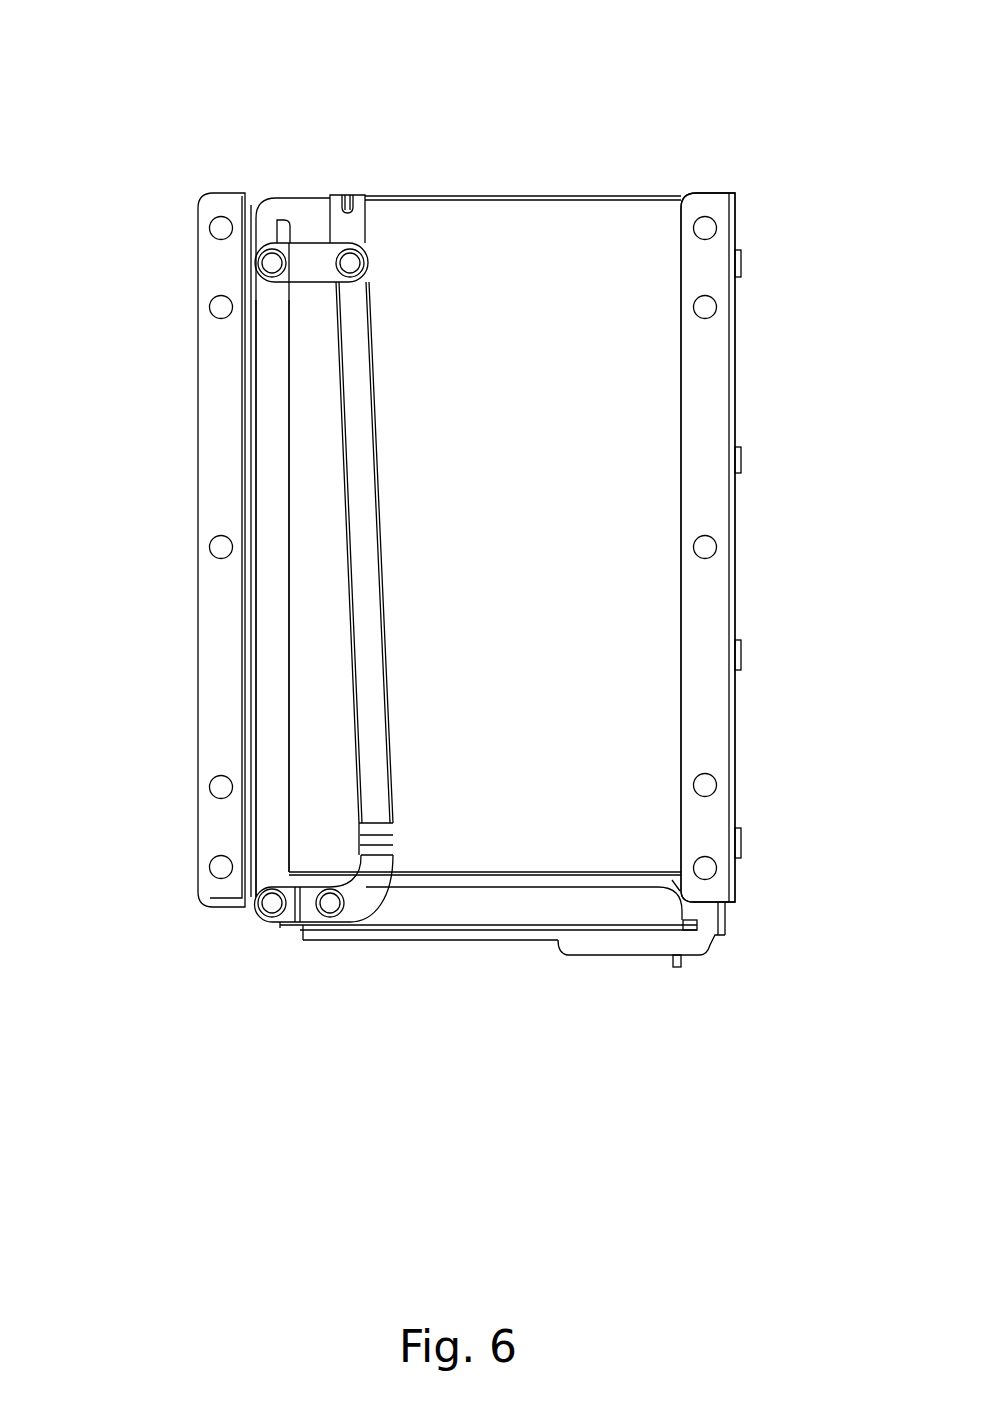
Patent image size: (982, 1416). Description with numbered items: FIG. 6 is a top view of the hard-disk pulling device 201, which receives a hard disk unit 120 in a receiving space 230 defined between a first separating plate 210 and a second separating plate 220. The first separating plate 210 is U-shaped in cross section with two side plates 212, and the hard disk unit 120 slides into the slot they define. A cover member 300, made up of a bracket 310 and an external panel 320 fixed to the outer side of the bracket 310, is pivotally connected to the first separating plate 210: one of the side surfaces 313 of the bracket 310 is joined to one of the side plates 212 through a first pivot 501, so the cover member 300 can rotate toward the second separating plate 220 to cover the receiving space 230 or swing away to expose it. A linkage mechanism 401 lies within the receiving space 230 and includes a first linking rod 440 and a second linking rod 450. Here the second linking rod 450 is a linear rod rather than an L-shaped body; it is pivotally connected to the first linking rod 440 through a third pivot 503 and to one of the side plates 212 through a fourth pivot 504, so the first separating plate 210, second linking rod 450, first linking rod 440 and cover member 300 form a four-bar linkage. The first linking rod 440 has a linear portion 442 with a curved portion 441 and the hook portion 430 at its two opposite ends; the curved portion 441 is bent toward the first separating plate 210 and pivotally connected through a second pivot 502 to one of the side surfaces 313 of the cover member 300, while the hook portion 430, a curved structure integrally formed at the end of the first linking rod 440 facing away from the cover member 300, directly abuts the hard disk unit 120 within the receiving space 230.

The hard-disk pulling device 201 is at (72, 23).
The hard disk unit 120 is at (647, 748).
The first separating plate 210 is at (252, 407).
The side plates 212 is at (270, 458).
The second separating plate 220 is at (197, 193).
The receiving space 230 is at (685, 193).
The cover member 300 is at (637, 1040).
The bracket 310 is at (548, 908).
The side surfaces 313 is at (463, 908).
The external panel 320 is at (604, 948).
The linkage mechanism 401 is at (263, 109).
The hook portion 430 is at (332, 193).
The first linking rod 440 is at (271, 569).
The curved portion 441 is at (360, 897).
The linear portion 442 is at (370, 665).
The second linking rod 450 is at (237, 227).
The first pivot 501 is at (272, 906).
The second pivot 502 is at (330, 907).
The third pivot 503 is at (350, 264).
The fourth pivot 504 is at (265, 266).